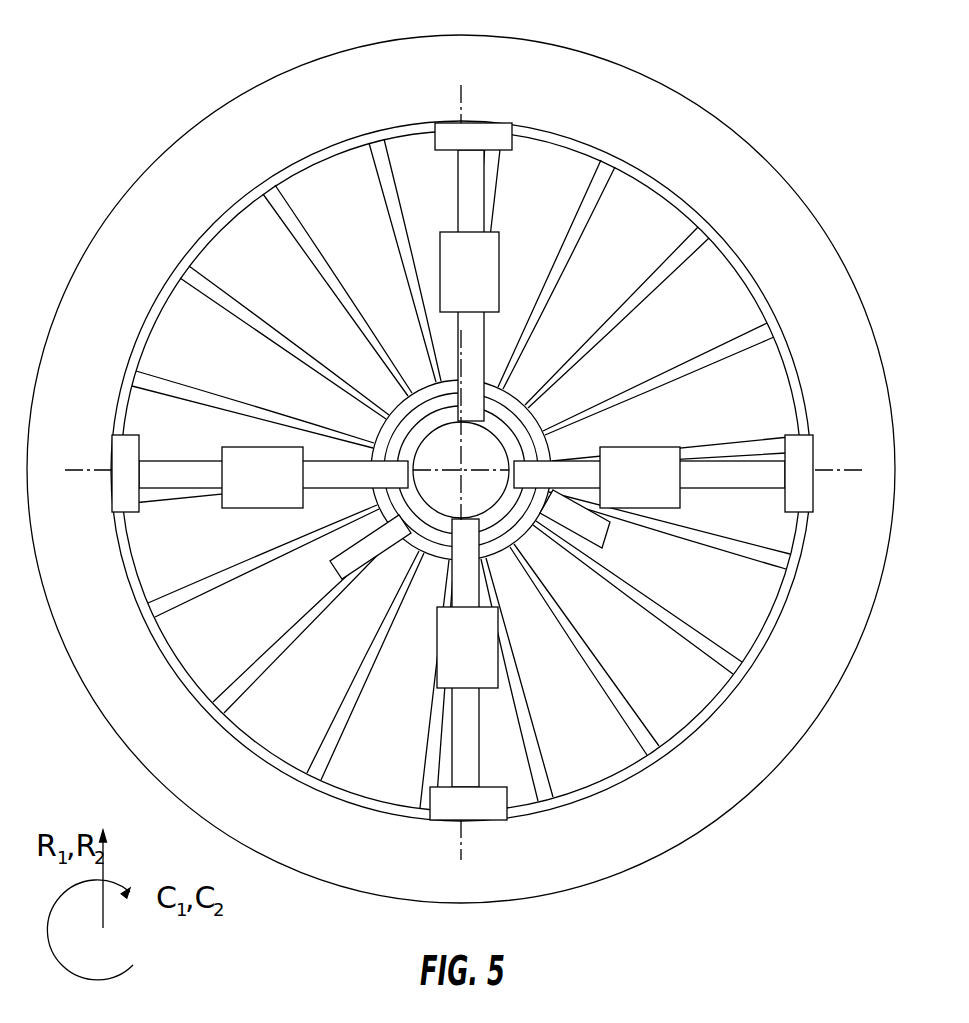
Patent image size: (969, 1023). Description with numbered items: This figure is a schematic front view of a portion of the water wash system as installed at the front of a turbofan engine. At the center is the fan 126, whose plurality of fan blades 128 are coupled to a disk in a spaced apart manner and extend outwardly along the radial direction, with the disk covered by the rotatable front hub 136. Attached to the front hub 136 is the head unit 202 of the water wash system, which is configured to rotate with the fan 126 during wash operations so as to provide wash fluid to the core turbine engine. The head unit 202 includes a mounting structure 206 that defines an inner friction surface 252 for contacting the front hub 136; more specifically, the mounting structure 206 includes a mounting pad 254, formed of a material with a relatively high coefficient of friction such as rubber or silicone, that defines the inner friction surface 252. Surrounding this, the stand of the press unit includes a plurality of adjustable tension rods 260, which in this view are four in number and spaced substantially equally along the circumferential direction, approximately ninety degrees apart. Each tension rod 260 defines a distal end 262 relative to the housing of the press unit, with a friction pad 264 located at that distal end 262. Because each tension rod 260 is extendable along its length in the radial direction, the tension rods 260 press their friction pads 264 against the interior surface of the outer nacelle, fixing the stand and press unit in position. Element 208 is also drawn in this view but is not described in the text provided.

The fan 126 is at (335, 185).
The fan blades 128 is at (356, 158).
The head unit 202 is at (552, 400).
The mounting structure 206 is at (512, 390).
The inner friction surface 252 is at (483, 488).
The mounting pad 254 is at (487, 530).
The adjustable tension rods 260 is at (493, 266).
The distal end 262 is at (816, 462).
The friction pad 264 is at (812, 491).
The front hub 136 is at (403, 540).
The balance weight 208 is at (600, 547).